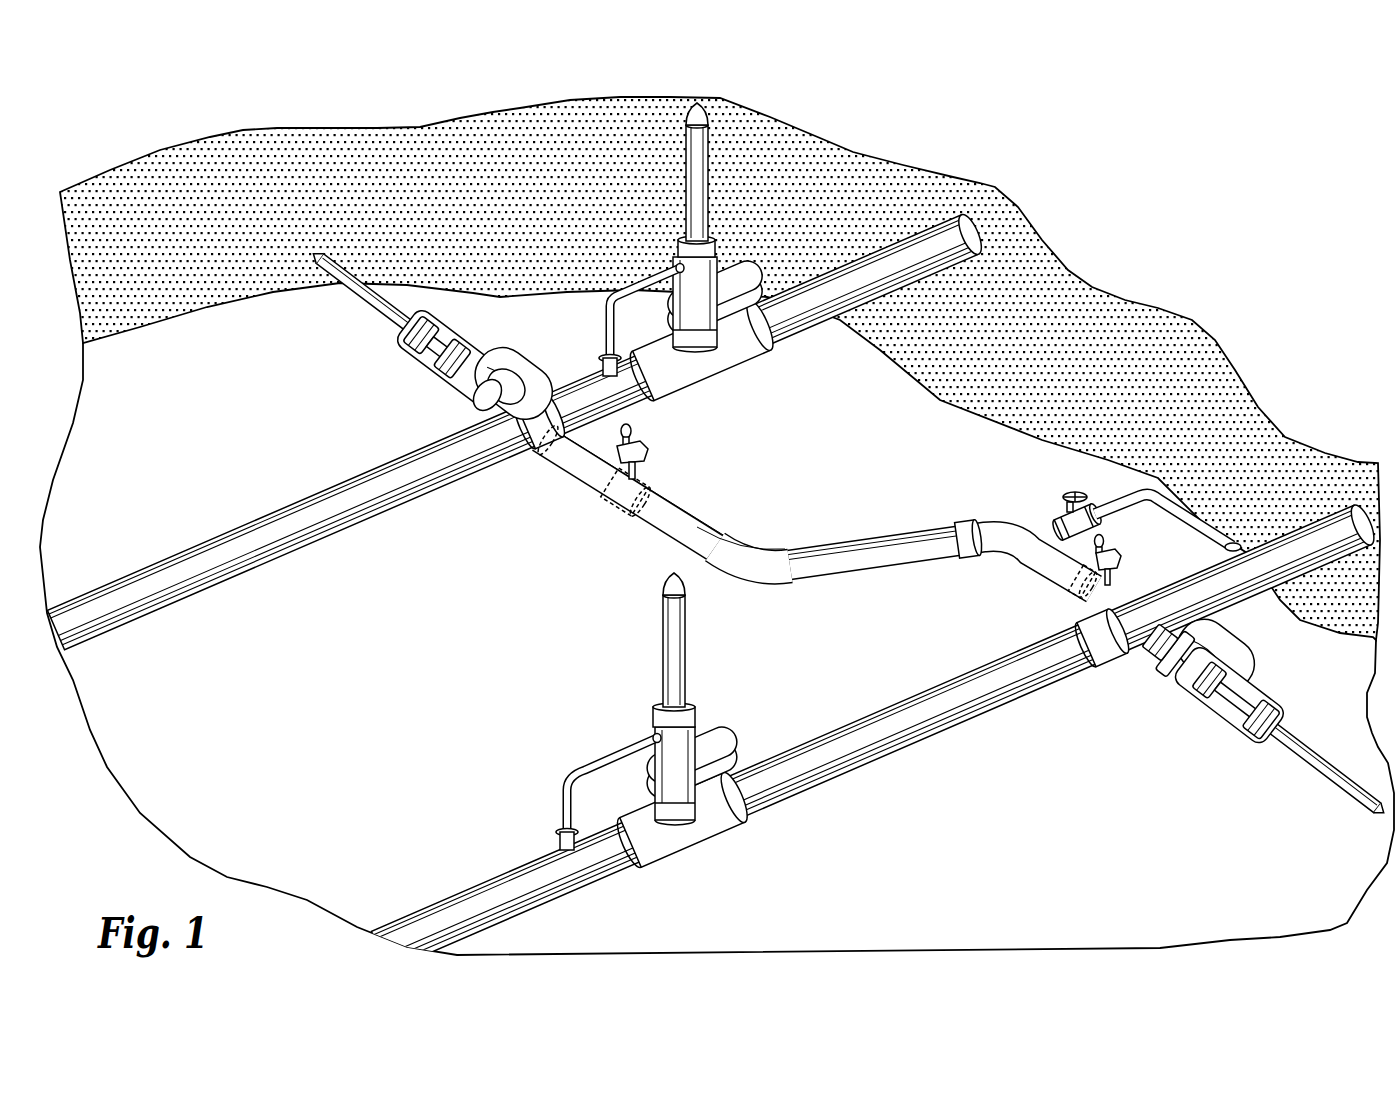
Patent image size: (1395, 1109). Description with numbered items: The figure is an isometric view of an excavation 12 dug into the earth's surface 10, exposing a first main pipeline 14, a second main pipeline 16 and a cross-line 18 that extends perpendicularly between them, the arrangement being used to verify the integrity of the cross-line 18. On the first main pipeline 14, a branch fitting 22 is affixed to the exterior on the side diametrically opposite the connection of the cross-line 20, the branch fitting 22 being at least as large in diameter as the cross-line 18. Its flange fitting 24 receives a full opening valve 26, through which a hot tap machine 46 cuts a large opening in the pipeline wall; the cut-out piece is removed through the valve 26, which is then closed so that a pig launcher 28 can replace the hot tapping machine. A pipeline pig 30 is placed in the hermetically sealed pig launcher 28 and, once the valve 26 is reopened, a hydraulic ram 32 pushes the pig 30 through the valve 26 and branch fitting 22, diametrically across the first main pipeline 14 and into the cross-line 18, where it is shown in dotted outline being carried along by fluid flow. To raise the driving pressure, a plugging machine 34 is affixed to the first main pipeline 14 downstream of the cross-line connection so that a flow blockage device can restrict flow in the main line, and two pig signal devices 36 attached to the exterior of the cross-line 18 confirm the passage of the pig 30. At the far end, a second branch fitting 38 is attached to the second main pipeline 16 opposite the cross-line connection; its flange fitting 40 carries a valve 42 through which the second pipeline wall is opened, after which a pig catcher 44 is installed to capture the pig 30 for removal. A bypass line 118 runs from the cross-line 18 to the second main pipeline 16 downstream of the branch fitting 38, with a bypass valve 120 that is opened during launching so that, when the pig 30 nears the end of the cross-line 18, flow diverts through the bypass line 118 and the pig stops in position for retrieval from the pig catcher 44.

The earth's surface 10 is at (1168, 178).
The excavation 12 is at (1164, 340).
The first main pipeline 14 is at (925, 243).
The second main pipeline 16 is at (1290, 535).
The cross-line 18 is at (875, 540).
The connection of the cross-line 20 is at (550, 460).
The branch fitting 22 is at (515, 372).
The flange fitting 24 is at (480, 416).
The valve 26 is at (500, 367).
The pig launcher 28 is at (440, 380).
The pipeline pig 30 is at (432, 356).
The hydraulic ram 32 is at (363, 297).
The plugging machine 34 is at (740, 231).
The pig signal device 36 is at (643, 453).
The branch fitting 38 is at (1152, 658).
The flange fitting 40 is at (1157, 664).
The valve 42 is at (1238, 652).
The pig catcher 44 is at (1230, 720).
The hot tap machine 46 is at (702, 700).
The bypass line 118 is at (1113, 495).
The bypass valve 120 is at (1063, 510).